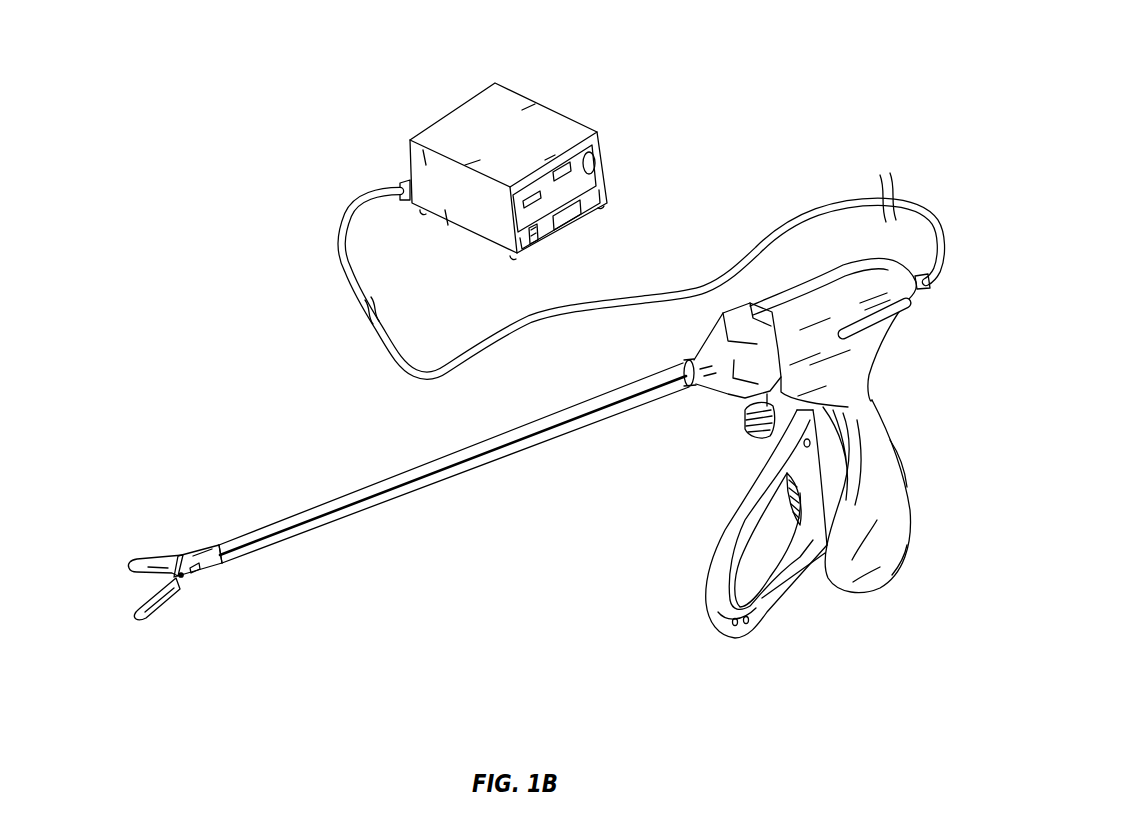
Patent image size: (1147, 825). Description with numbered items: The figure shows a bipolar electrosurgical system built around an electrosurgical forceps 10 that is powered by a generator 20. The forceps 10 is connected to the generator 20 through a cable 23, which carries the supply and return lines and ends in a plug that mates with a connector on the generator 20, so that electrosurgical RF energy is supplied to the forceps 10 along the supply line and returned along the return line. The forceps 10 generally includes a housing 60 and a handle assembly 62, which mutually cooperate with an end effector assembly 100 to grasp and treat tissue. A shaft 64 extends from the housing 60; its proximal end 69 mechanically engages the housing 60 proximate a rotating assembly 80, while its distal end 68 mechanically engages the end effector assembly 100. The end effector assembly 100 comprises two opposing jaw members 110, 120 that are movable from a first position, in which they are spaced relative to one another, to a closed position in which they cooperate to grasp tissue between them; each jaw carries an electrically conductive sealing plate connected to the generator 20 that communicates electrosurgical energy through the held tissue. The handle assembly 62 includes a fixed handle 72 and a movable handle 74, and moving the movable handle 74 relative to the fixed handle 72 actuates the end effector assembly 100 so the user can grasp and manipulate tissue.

The electrosurgical forceps 10 is at (272, 266).
The generator 20 is at (478, 108).
The cable 23 is at (936, 237).
The housing 60 is at (842, 262).
The handle assembly 62 is at (745, 642).
The shaft 64 is at (567, 428).
The distal end 68 is at (205, 565).
The proximal end 69 is at (682, 361).
The fixed handle 72 is at (873, 595).
The movable handle 74 is at (752, 535).
The rotating assembly 80 is at (706, 402).
The end effector assembly 100 is at (221, 585).
The jaw member 110 is at (143, 560).
The jaw member 120 is at (137, 613).